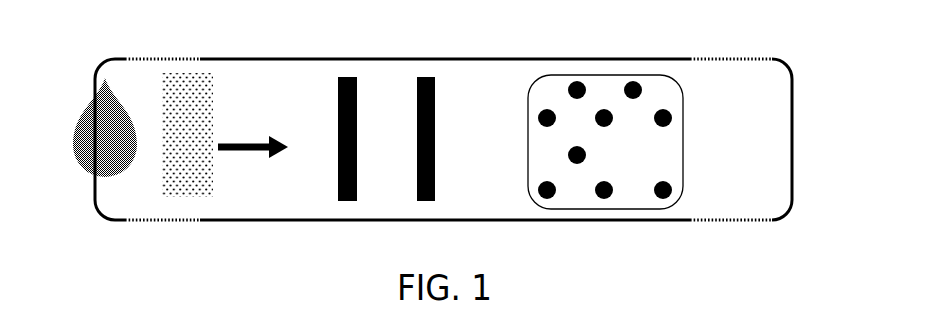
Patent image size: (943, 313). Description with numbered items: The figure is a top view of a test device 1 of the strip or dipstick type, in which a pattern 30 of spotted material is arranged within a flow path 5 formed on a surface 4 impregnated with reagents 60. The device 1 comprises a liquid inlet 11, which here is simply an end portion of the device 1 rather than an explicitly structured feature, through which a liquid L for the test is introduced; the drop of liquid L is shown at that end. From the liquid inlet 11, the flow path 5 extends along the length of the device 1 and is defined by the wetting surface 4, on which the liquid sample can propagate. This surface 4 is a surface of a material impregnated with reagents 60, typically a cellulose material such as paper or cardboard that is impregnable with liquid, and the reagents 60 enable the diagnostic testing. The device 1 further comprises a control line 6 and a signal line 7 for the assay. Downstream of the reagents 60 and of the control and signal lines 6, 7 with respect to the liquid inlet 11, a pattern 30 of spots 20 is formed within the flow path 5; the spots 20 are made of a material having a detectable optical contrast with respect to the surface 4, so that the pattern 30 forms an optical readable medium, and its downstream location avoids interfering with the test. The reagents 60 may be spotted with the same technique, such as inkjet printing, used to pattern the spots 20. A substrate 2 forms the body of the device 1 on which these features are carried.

The test device 1 is at (778, 222).
The substrate 2 is at (566, 226).
The wetting surface 4 is at (266, 68).
The flow path 5 is at (250, 217).
The control line 6 is at (347, 77).
The signal line 7 is at (425, 77).
The liquid inlet 11 is at (85, 193).
The spots 20 is at (679, 183).
The pattern 30 is at (663, 75).
The reagents 60 is at (185, 85).
The liquid L is at (73, 143).